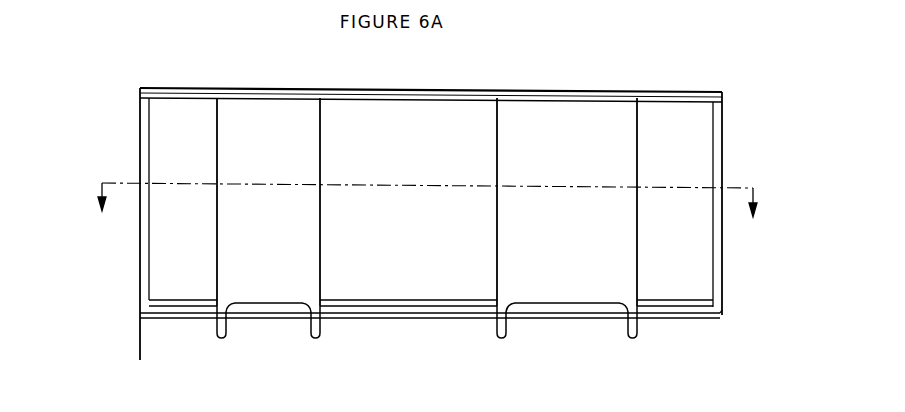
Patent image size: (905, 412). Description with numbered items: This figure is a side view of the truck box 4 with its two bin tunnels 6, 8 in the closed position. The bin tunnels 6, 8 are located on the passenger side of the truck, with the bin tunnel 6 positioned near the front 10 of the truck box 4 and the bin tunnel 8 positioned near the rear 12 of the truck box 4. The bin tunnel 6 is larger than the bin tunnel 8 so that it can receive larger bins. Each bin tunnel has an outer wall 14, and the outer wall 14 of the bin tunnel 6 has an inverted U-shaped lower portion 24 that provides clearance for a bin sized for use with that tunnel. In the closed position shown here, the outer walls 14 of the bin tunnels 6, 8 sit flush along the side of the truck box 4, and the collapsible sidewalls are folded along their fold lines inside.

The truck box 4 is at (427, 145).
The bin tunnel 6 is at (557, 142).
The bin tunnel 8 is at (248, 155).
The front 10 is at (720, 177).
The rear 12 is at (140, 241).
The outer wall 14 is at (245, 179).
The inverted U-shaped lower portion 24 is at (258, 303).